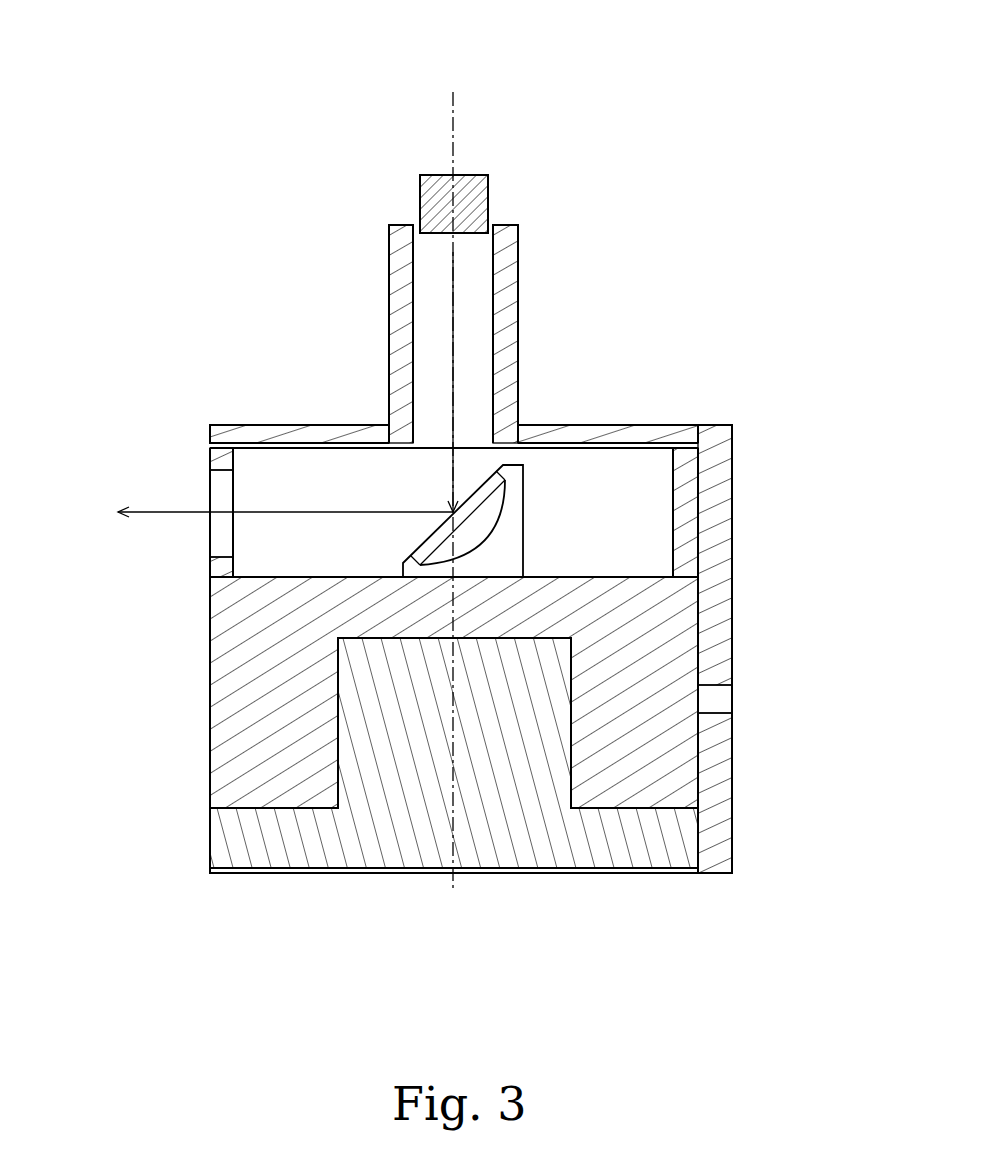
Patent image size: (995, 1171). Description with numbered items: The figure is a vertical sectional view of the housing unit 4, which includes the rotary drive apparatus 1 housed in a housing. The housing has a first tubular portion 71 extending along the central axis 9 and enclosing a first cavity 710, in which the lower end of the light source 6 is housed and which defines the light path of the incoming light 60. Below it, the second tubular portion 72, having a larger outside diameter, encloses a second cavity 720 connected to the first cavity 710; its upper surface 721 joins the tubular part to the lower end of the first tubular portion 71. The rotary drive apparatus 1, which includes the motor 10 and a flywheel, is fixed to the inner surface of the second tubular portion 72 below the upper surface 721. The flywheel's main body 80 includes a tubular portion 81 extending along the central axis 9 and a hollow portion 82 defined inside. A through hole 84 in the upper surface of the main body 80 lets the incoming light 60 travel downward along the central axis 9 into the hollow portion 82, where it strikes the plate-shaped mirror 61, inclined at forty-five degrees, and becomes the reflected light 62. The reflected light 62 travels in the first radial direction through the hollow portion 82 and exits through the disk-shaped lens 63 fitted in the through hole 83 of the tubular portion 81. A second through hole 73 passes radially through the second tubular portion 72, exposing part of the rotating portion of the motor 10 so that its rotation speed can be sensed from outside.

The rotary drive apparatus 1 is at (775, 632).
The housing unit 4 is at (627, 110).
The light source 6 is at (470, 185).
The central axis 9 is at (453, 125).
The motor 10 is at (195, 843).
The incoming light 60 is at (455, 350).
The mirror 61 is at (485, 492).
The reflected light 62 is at (248, 515).
The lens 63 is at (222, 478).
The first tubular portion 71 is at (400, 355).
The second tubular portion 72 is at (712, 848).
The second through hole 73 is at (713, 699).
The main body 80 is at (183, 563).
The tubular portion 81 is at (688, 477).
The hollow portion 82 is at (626, 550).
The through hole 83 is at (226, 502).
The through hole 84 is at (466, 445).
The first cavity 710 is at (432, 292).
The second cavity 720 is at (260, 447).
The upper surface 721 is at (666, 432).